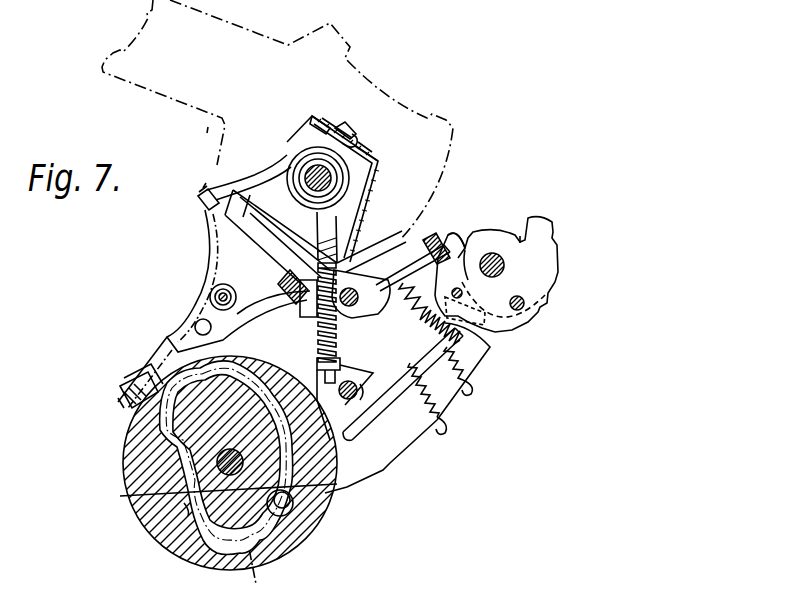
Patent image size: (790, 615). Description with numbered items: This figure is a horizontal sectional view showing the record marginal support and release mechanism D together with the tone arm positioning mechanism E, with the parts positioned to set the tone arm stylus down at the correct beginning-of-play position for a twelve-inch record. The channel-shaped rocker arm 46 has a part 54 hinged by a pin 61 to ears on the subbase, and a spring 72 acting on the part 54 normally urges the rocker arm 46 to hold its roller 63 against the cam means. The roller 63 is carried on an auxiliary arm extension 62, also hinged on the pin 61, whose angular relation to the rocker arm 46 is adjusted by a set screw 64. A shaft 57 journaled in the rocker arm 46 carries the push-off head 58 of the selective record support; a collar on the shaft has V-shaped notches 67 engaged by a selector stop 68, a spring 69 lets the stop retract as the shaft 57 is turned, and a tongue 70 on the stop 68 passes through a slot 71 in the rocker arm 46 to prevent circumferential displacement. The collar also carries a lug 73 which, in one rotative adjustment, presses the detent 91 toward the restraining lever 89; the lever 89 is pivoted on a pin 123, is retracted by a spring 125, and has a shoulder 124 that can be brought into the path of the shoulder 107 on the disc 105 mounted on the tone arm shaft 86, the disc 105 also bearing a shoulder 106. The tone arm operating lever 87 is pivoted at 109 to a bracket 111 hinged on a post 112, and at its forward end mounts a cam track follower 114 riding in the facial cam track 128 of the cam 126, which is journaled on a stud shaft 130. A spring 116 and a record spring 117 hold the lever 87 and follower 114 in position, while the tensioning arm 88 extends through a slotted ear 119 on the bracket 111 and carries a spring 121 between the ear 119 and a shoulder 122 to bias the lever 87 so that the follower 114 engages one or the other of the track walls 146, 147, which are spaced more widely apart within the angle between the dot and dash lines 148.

The push-off head 58 is at (350, 45).
The rocker arm 46 is at (317, 114).
The lug 73 is at (330, 124).
The tongue 70 is at (350, 143).
The slot 71 is at (360, 141).
The shaft 57 is at (373, 161).
The V-shaped notches 67 is at (300, 158).
The selector stop 68 is at (335, 178).
The spring 69 is at (304, 172).
The tensioning arm 88 is at (338, 236).
The detent 91 is at (218, 185).
The record marginal support and release mechanism D is at (208, 181).
The pin 61 is at (200, 197).
The part of rocker arm 54 is at (203, 247).
The auxiliary arm extension 62 is at (216, 268).
The spring 72 is at (212, 299).
The set screw 64 is at (194, 327).
The roller 63 is at (127, 407).
The shoulder 122 is at (284, 260).
The spring 121 is at (320, 328).
The slotted ear 119 is at (338, 362).
The pin 123 is at (336, 316).
The spring 125 is at (360, 305).
The restraining lever 89 is at (360, 286).
The shoulder 107 is at (438, 236).
The shoulder 124 is at (452, 236).
The disc 105 is at (556, 284).
The shoulder 106 is at (518, 224).
The tone arm shaft 86 is at (504, 264).
The bracket 111 is at (401, 378).
The tone arm positioning mechanism E is at (422, 325).
The pivot 109 is at (432, 416).
The record spring 117 is at (450, 424).
The spring 116 is at (456, 338).
The post 112 is at (362, 404).
The tone arm operating lever 87 is at (394, 462).
The dot and dash lines 148 is at (277, 590).
The cam 126 is at (136, 463).
The cam track 128 is at (193, 527).
The stud shaft 130 is at (210, 431).
The cam track follower 114 is at (274, 498).
The cam track wall 146 is at (206, 496).
The cam track wall 147 is at (186, 505).